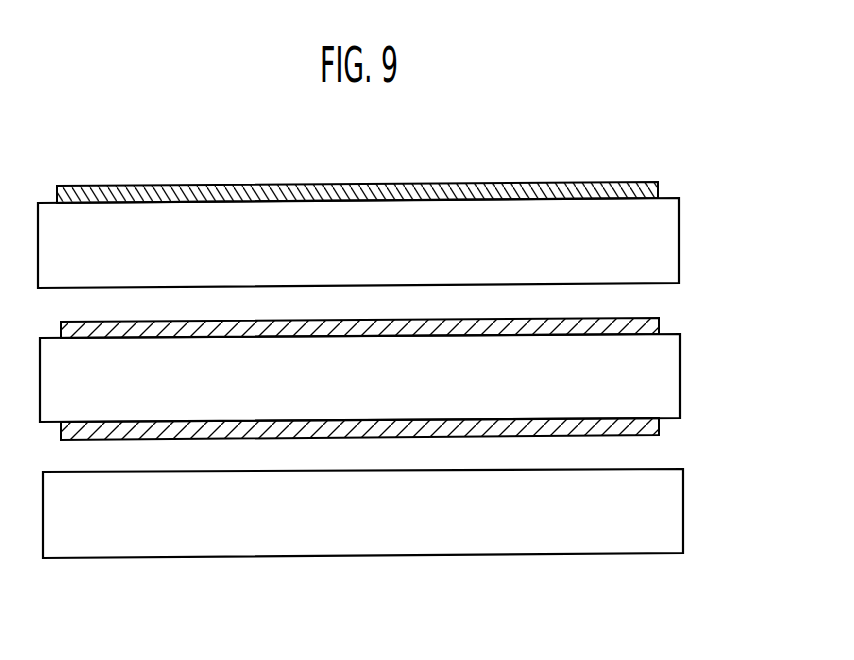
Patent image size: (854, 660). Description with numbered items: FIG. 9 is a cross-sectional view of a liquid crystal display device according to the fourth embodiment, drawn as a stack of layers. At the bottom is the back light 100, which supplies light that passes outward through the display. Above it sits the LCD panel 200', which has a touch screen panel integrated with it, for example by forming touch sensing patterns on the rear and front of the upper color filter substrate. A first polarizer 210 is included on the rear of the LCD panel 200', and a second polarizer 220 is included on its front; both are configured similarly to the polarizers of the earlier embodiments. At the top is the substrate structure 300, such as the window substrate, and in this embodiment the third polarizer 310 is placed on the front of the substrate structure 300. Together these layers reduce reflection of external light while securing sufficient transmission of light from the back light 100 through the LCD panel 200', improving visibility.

The back light 100 is at (683, 508).
The LCD panel 200' is at (398, 378).
The first polarizer 210 is at (659, 426).
The second polarizer 220 is at (659, 325).
The substrate structure 300 is at (679, 245).
The third polarizer 310 is at (658, 187).